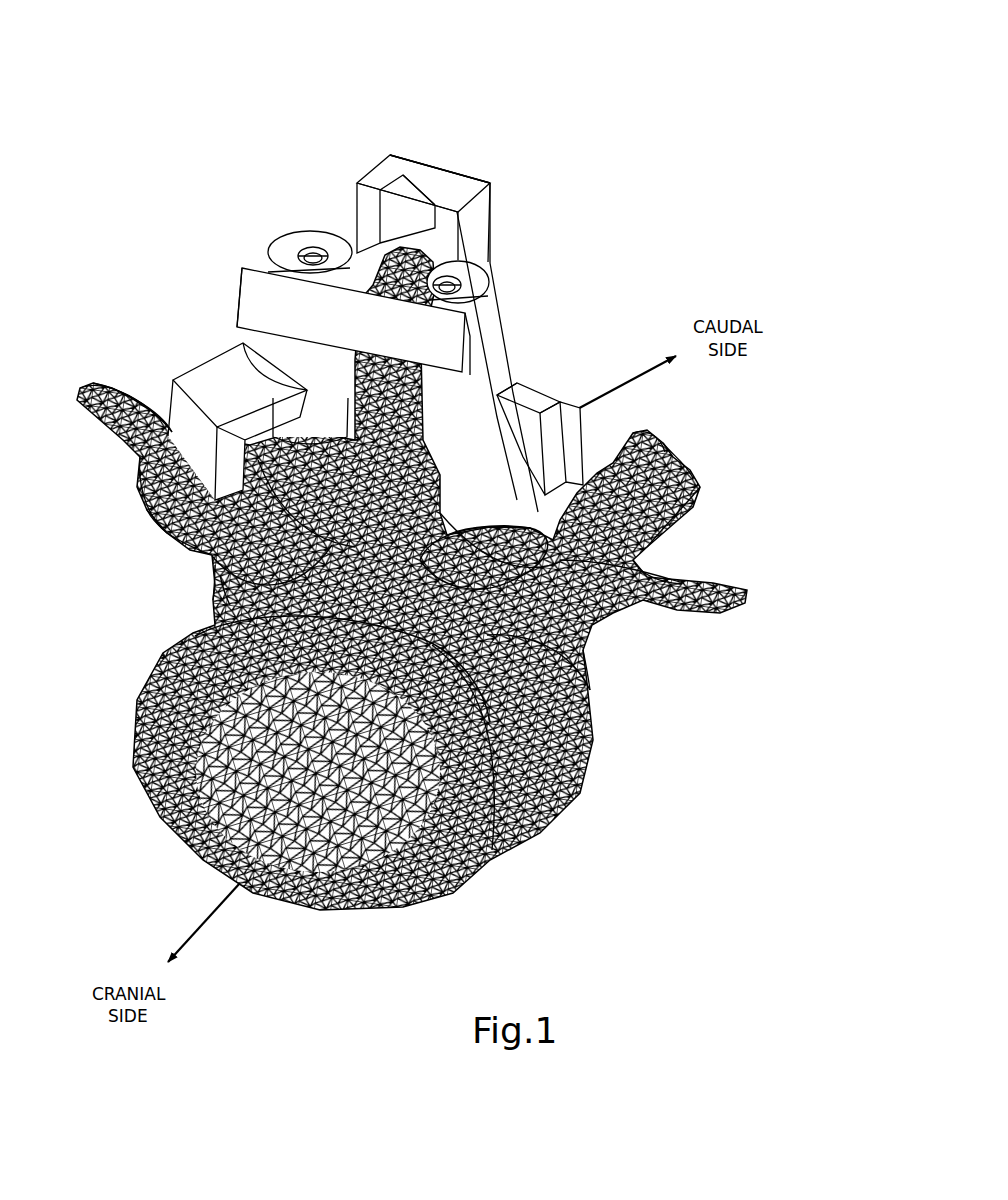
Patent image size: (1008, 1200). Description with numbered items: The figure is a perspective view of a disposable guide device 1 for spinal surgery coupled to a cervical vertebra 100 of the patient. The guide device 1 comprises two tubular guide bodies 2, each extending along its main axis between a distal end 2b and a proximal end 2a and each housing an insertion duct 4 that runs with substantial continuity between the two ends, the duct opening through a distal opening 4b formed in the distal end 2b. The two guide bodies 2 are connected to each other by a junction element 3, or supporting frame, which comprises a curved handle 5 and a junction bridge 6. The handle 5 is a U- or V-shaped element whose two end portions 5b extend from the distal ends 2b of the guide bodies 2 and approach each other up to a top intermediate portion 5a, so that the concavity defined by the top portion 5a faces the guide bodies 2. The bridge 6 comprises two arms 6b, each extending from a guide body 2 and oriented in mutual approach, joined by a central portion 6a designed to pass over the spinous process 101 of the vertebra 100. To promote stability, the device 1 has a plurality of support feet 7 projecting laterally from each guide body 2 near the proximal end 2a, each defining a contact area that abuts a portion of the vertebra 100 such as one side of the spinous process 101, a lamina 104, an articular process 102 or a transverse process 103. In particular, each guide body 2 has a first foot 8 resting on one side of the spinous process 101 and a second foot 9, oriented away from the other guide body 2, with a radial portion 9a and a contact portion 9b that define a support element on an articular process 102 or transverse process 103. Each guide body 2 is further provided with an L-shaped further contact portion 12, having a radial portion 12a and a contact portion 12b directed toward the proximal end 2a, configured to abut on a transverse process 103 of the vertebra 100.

The guide device 1 is at (642, 106).
The tubular guide body 2 is at (300, 222).
The proximal end 2a is at (220, 594).
The distal end 2b is at (309, 248).
The junction element 3 is at (449, 152).
The insertion duct 4 is at (327, 240).
The distal opening 4b is at (297, 254).
The curved handle 5 is at (232, 297).
The top intermediate portion 5a is at (262, 284).
The end portion 5b is at (300, 257).
The junction bridge 6 is at (487, 172).
The central portion 6a is at (420, 176).
The arm 6b is at (347, 235).
The support foot 7 is at (153, 386).
The first foot 8 is at (350, 386).
The second foot 9 is at (196, 433).
The radial portion 9a is at (206, 541).
The contact portion 9b is at (140, 473).
The further contact portion 12 is at (586, 444).
The radial portion 12a is at (550, 397).
The contact portion 12b is at (690, 478).
The cervical vertebra 100 is at (586, 824).
The spinous process 101 is at (408, 240).
The articular process 102 is at (157, 513).
The transverse process 103 is at (88, 383).
The lamina 104 is at (345, 450).